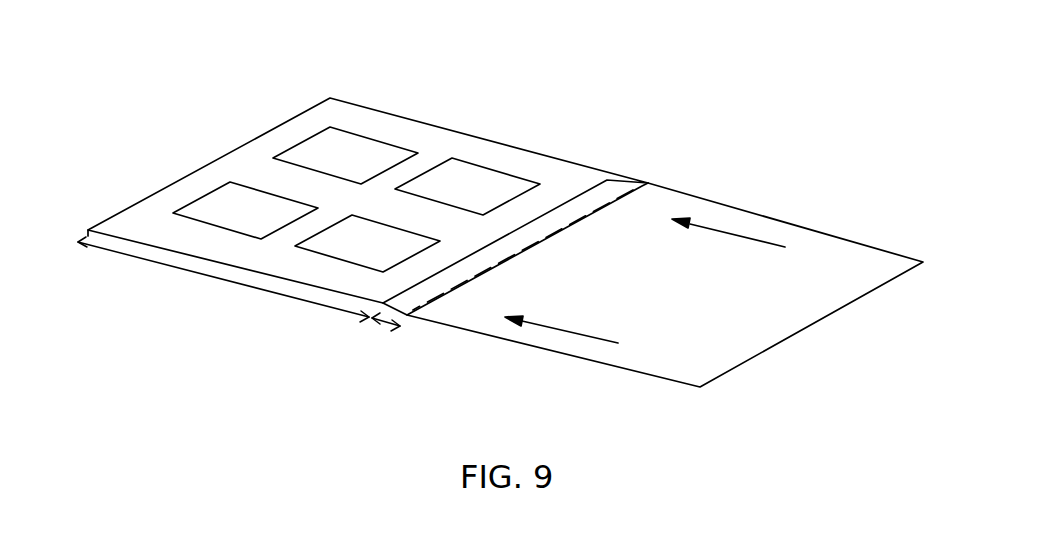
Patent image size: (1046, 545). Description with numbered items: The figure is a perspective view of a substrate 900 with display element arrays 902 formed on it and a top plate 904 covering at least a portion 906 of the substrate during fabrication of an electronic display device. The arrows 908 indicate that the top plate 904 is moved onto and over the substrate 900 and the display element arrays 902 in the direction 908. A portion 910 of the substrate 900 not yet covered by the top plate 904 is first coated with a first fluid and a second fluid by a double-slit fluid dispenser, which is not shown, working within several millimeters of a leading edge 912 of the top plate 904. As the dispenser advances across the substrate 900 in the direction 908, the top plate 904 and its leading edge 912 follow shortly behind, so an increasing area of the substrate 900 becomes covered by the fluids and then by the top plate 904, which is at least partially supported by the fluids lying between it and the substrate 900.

The substrate 900 is at (388, 113).
The display element arrays 902 is at (363, 166).
The top plate 904 is at (843, 286).
The portion of the substrate 906 is at (385, 323).
The direction 908 is at (550, 327).
The portion of substrate not yet covered by top plate 910 is at (213, 278).
The leading edge 912 is at (592, 180).